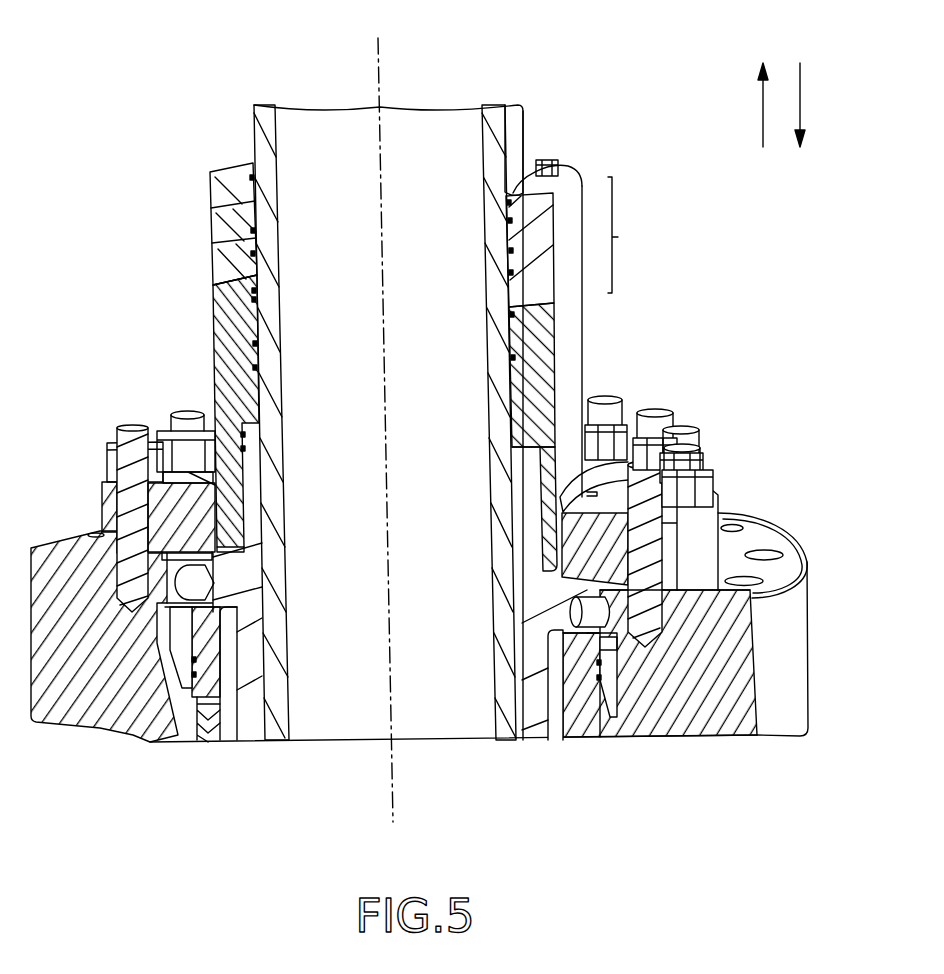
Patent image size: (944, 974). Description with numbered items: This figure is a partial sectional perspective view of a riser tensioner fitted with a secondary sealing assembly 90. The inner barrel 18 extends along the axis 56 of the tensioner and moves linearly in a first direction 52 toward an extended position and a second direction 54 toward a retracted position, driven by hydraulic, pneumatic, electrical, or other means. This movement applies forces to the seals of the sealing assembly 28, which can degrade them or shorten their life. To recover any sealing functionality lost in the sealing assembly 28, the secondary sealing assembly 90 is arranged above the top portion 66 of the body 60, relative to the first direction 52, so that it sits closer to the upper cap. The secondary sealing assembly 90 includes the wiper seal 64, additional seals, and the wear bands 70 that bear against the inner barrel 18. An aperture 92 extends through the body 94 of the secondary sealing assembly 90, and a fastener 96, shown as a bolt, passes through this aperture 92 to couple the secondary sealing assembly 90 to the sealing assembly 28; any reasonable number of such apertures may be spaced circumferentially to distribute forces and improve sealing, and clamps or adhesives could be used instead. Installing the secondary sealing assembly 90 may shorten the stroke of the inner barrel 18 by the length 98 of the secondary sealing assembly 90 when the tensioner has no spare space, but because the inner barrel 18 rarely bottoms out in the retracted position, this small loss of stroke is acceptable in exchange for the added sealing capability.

The inner barrel 18 is at (503, 742).
The sealing assembly 28 is at (612, 377).
The first direction 52 is at (763, 114).
The second direction 54 is at (800, 83).
The axis 56 is at (392, 781).
The body 60 is at (235, 379).
The wiper seal 64 is at (252, 180).
The top portion 66 is at (143, 326).
The wear bands 70 is at (253, 200).
The secondary sealing assembly 90 is at (594, 294).
The aperture 92 is at (570, 148).
The body 94 is at (540, 289).
The fastener 96 is at (557, 165).
The length 98 is at (618, 237).